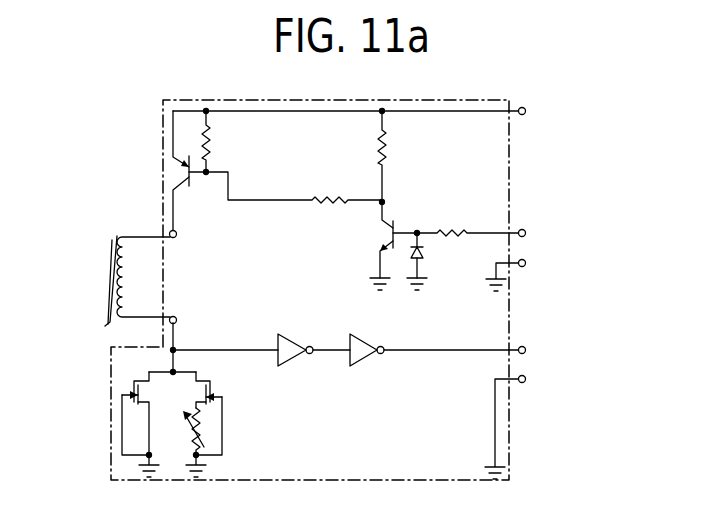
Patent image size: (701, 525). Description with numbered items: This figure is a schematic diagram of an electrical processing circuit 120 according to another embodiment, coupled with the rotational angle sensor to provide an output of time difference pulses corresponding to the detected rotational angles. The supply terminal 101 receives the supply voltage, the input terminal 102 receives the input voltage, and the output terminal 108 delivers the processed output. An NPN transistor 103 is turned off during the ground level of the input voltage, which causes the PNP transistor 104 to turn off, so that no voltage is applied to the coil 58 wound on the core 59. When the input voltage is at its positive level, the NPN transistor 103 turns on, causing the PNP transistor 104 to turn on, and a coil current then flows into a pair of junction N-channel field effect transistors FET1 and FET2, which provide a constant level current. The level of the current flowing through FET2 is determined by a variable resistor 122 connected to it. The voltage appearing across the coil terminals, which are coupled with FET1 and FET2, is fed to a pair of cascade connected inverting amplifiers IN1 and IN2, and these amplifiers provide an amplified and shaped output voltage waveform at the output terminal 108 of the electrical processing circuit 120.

The electrical processing circuit 120 is at (179, 100).
The PNP transistor 104 is at (194, 187).
The NPN transistor 103 is at (406, 216).
The supply voltage terminal Vcc 101 is at (525, 108).
The input terminal IN 102 is at (524, 230).
The output terminal OUT 108 is at (524, 347).
The variable resistor 122 is at (200, 427).
The transformer core 59 is at (110, 253).
The coil 58 is at (129, 239).
The junction N-channel field effect transistor FET1 is at (126, 383).
The junction N-channel field effect transistor FET2 is at (217, 386).
The inverting amplifier IN1 is at (288, 333).
The inverting amplifier IN2 is at (367, 333).